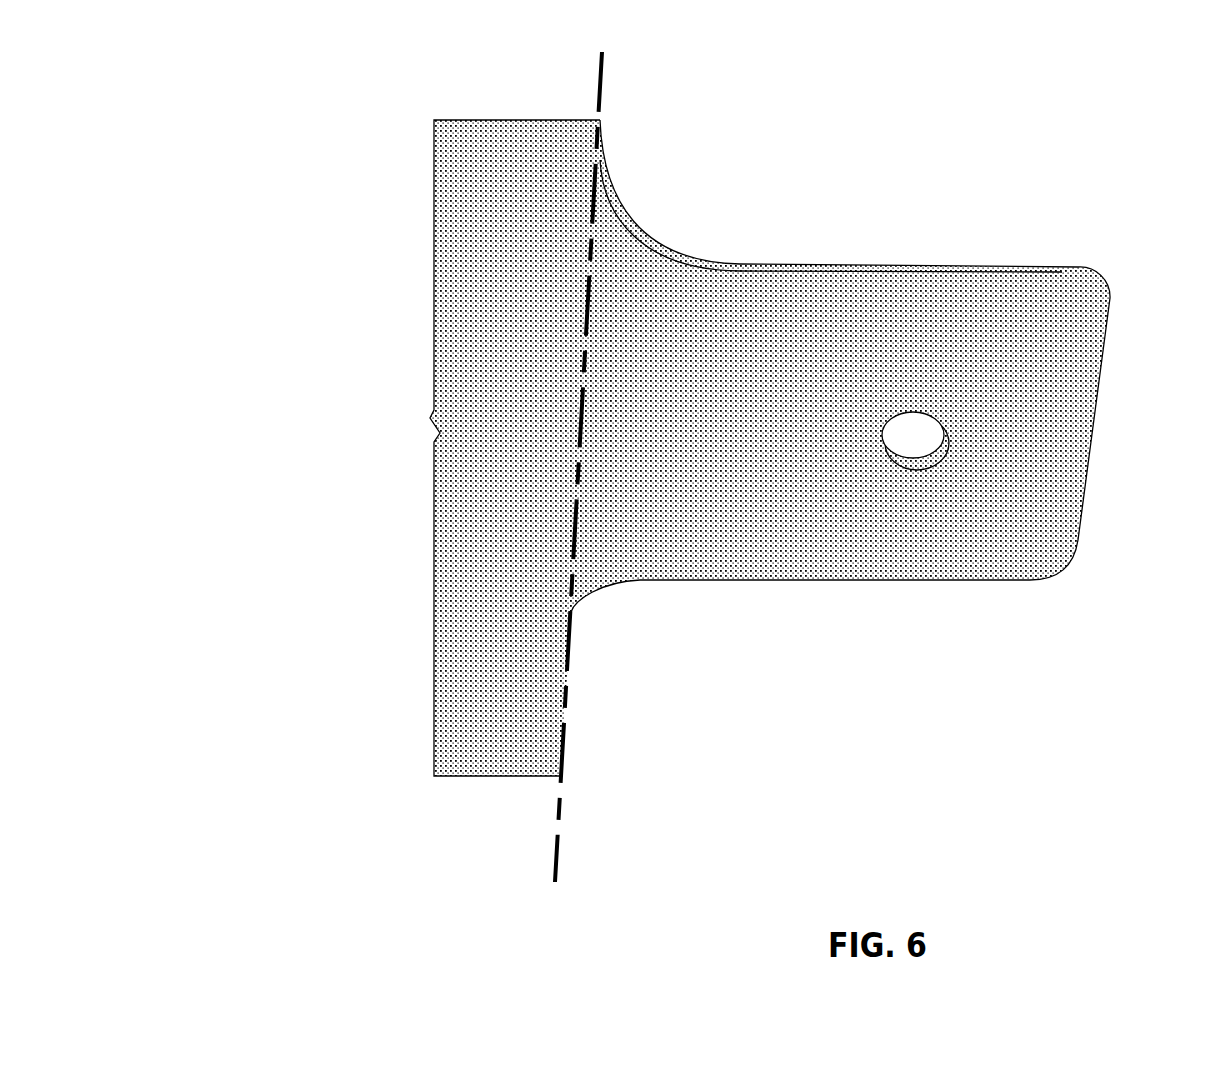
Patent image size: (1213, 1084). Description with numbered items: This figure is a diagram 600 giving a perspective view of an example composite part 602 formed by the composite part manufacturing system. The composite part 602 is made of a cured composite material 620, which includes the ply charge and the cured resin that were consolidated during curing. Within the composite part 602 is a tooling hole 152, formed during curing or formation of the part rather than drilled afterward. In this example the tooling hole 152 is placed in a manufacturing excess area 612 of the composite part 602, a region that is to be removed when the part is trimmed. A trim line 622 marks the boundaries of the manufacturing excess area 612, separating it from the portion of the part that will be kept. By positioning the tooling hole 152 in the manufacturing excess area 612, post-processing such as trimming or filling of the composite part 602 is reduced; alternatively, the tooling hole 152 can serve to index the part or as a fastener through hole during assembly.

The diagram 600 is at (670, 462).
The composite part 602 is at (405, 262).
The cured composite material 620 is at (512, 233).
The manufacturing excess area 612 is at (1072, 298).
The tooling hole 152 is at (922, 420).
The trim line 622 is at (557, 840).